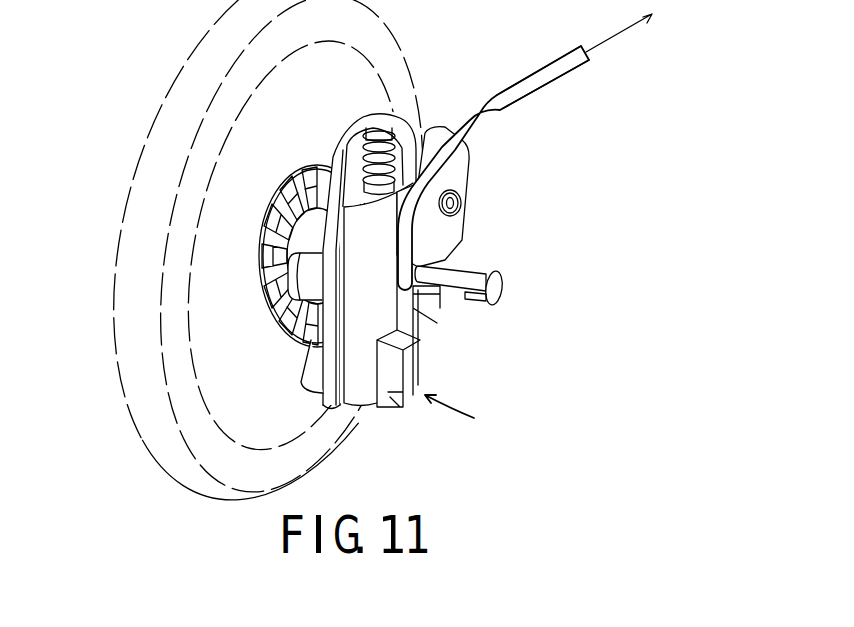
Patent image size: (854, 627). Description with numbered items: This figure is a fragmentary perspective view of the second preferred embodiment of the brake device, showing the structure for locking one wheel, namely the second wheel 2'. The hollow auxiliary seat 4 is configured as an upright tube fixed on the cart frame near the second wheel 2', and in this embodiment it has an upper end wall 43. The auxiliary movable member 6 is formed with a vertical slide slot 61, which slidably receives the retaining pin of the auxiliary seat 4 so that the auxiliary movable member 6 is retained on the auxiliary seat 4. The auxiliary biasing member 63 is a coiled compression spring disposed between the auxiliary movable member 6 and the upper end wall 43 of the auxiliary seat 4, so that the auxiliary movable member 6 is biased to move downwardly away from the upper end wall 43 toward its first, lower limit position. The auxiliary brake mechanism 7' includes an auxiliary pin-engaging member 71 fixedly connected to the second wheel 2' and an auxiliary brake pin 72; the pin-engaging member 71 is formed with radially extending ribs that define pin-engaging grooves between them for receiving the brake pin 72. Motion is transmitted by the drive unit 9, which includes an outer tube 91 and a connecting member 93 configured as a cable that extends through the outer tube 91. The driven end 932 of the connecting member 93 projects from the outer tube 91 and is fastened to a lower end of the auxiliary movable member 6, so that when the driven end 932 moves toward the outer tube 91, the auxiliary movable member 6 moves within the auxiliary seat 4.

The second wheel 2' is at (275, 258).
The auxiliary brake mechanism 7' is at (225, 256).
The auxiliary pin-engaging member 71 is at (260, 263).
The auxiliary brake pin 72 is at (270, 276).
The auxiliary seat 4 is at (373, 113).
The upper end wall 43 is at (343, 143).
The auxiliary movable member 6 is at (456, 416).
The vertical slide slot 61 is at (364, 383).
The auxiliary biasing member 63 is at (413, 137).
The drive unit 9 is at (561, 101).
The outer tube 91 is at (522, 90).
The connecting member 93 is at (414, 300).
The driven end 932 is at (408, 338).